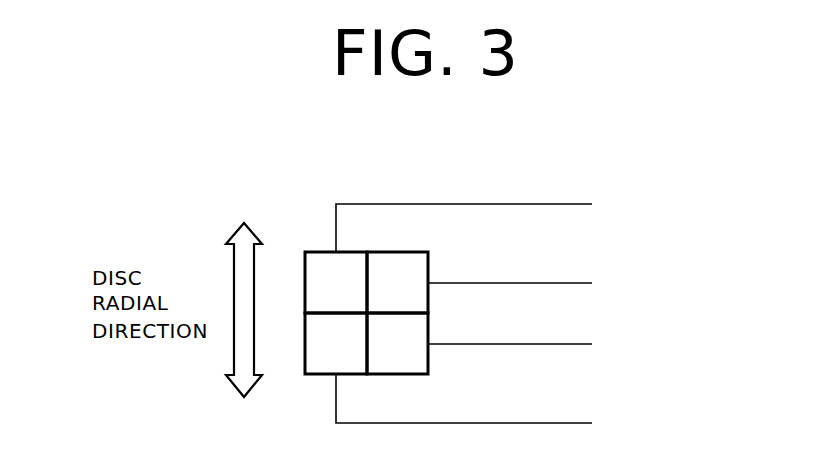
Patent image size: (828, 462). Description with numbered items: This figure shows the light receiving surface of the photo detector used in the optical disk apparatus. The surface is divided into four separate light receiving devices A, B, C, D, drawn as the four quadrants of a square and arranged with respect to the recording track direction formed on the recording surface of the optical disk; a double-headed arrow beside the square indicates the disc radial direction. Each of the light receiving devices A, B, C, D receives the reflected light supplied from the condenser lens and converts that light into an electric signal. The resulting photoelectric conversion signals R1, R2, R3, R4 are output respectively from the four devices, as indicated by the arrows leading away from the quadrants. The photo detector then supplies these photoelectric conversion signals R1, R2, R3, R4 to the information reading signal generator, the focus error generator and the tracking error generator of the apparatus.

The light receiving device A is at (336, 282).
The light receiving device B is at (397, 282).
The light receiving device C is at (397, 343).
The light receiving device D is at (336, 343).
The photoelectric conversion signal R1 is at (501, 221).
The photoelectric conversion signal R2 is at (547, 284).
The photoelectric conversion signal R3 is at (547, 345).
The photoelectric conversion signal R4 is at (501, 406).